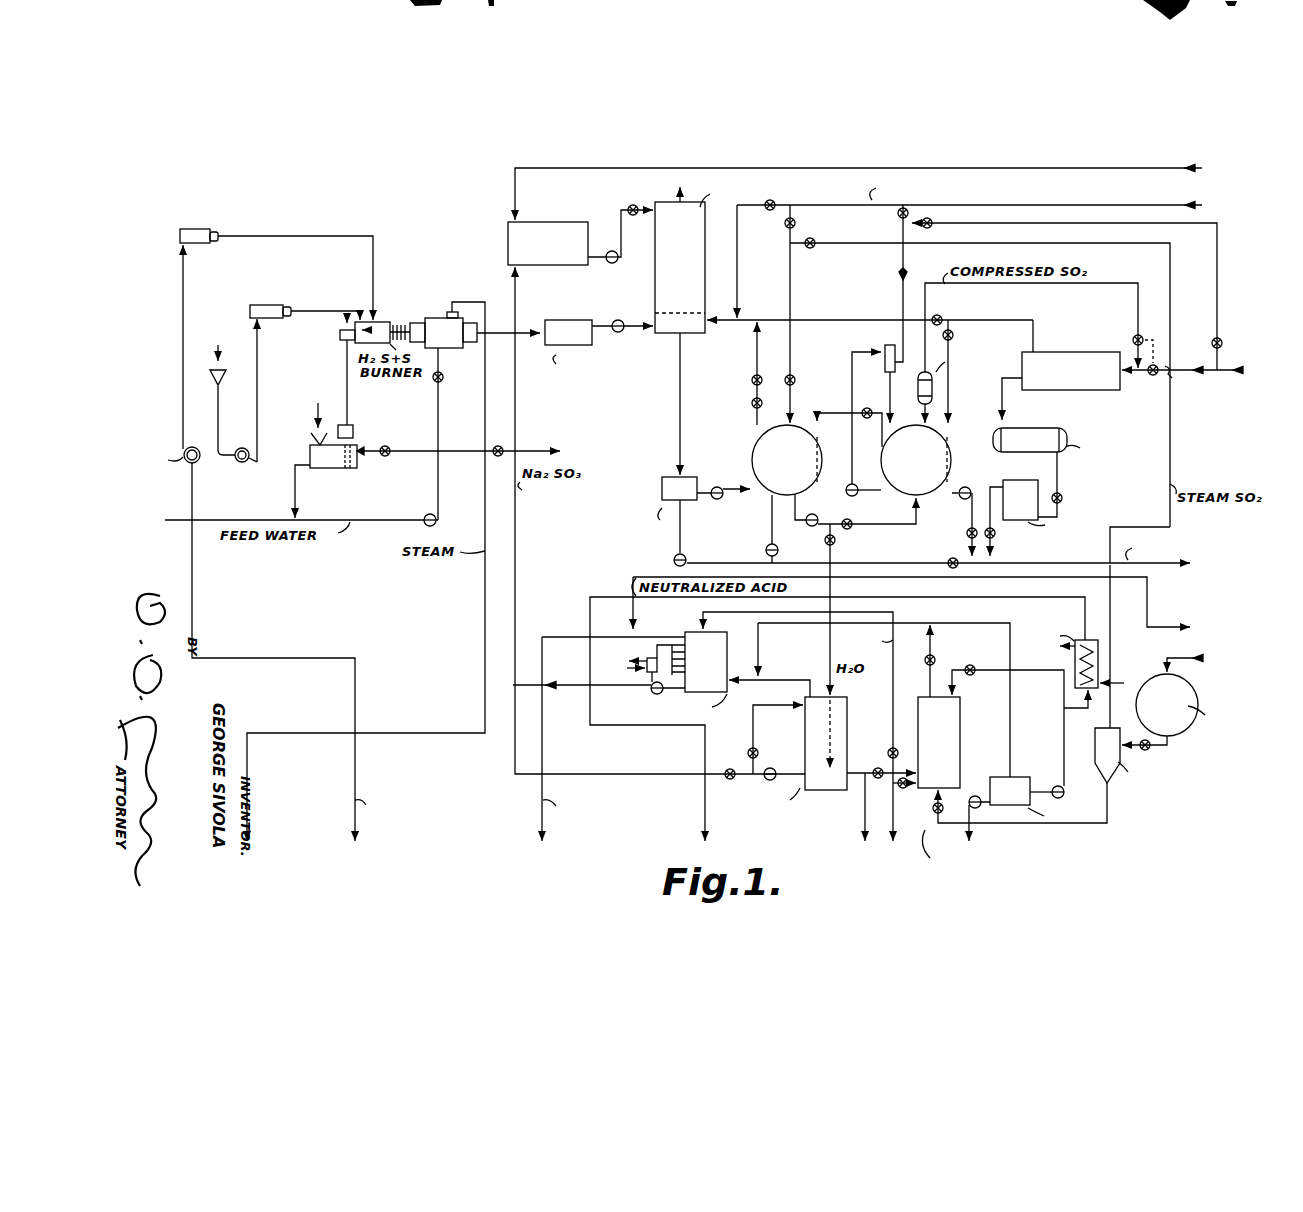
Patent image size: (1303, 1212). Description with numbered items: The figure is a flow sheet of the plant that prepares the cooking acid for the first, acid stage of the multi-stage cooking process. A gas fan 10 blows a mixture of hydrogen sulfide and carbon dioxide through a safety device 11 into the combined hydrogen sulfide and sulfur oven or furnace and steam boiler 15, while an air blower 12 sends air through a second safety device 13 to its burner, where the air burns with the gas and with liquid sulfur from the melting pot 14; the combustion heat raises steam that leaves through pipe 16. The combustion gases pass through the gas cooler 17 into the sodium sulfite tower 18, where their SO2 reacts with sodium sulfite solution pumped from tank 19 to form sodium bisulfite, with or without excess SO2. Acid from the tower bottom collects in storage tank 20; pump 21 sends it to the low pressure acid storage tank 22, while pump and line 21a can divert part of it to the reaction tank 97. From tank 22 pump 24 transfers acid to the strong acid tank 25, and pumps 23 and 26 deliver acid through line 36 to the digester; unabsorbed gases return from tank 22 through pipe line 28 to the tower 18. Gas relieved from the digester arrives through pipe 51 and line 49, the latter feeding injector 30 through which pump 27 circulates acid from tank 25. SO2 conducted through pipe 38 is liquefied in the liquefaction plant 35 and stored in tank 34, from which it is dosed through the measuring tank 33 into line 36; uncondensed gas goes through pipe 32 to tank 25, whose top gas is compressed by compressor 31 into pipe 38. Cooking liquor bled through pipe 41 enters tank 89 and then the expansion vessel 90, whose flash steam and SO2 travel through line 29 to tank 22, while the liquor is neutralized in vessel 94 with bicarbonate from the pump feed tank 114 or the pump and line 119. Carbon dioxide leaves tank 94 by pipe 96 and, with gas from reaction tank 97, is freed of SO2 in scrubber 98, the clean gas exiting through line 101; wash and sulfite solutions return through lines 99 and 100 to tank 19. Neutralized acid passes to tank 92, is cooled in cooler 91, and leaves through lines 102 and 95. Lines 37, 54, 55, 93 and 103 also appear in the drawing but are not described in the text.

The gas fan 10 is at (196, 440).
The safety device 11 is at (190, 227).
The air blower 12 is at (243, 448).
The safety device 13 is at (262, 312).
The melting pot 14 is at (323, 470).
The combined hydrogen sulfide and sulfur oven or furnace and steam boiler 15 is at (431, 318).
The steam pipe 16 is at (483, 388).
The gas cooler 17 is at (577, 312).
The sodium sulfite tower 18 is at (655, 283).
The sodium sulfite tank 19 is at (561, 223).
The storage tank 20 is at (666, 477).
The pump 21 is at (722, 485).
The pump and line 21a is at (684, 534).
The low pressure acid storage tank 22 is at (754, 452).
The pump 23 is at (778, 556).
The pump 24 is at (820, 506).
The strong acid tank 25 is at (948, 453).
The pump 26 is at (968, 487).
The pump 27 is at (860, 500).
The pipe line 28 is at (756, 356).
The line 29 is at (1111, 648).
The injector 30 is at (887, 346).
The compressor 31 is at (918, 392).
The pipe 32 is at (1002, 316).
The measuring tank 33 is at (1024, 474).
The liquid SO2 storage tank 34 is at (1060, 432).
The liquefaction plant 35 is at (1096, 343).
The line 36 is at (1170, 566).
The pipe to acid tower 37 is at (846, 320).
The pipe 38 is at (1172, 380).
The pipe 41 is at (1195, 665).
The line 49 is at (1172, 281).
The pipe 51 is at (1160, 190).
The Na2SO3 pipe 54 is at (1148, 165).
The CO2 outlet 55 is at (1175, 630).
The tank 89 is at (1192, 692).
The expansion vessel 90 is at (1111, 782).
The cooler 91 is at (1072, 653).
The tank 92 is at (1020, 777).
The pipe 93 is at (1012, 718).
The neutralization vessel 94 is at (957, 730).
The line 95 is at (972, 835).
The pipe 96 is at (945, 642).
The reaction tank 97 is at (849, 741).
The scrubber 98 is at (690, 632).
The line 99 is at (566, 681).
The line 100 is at (522, 538).
The line 101 is at (541, 824).
The line 102 is at (994, 598).
The H2S CO2 inlet pipe 103 is at (357, 767).
The pump feed tank 114 is at (858, 832).
The pump and line 119 is at (893, 697).